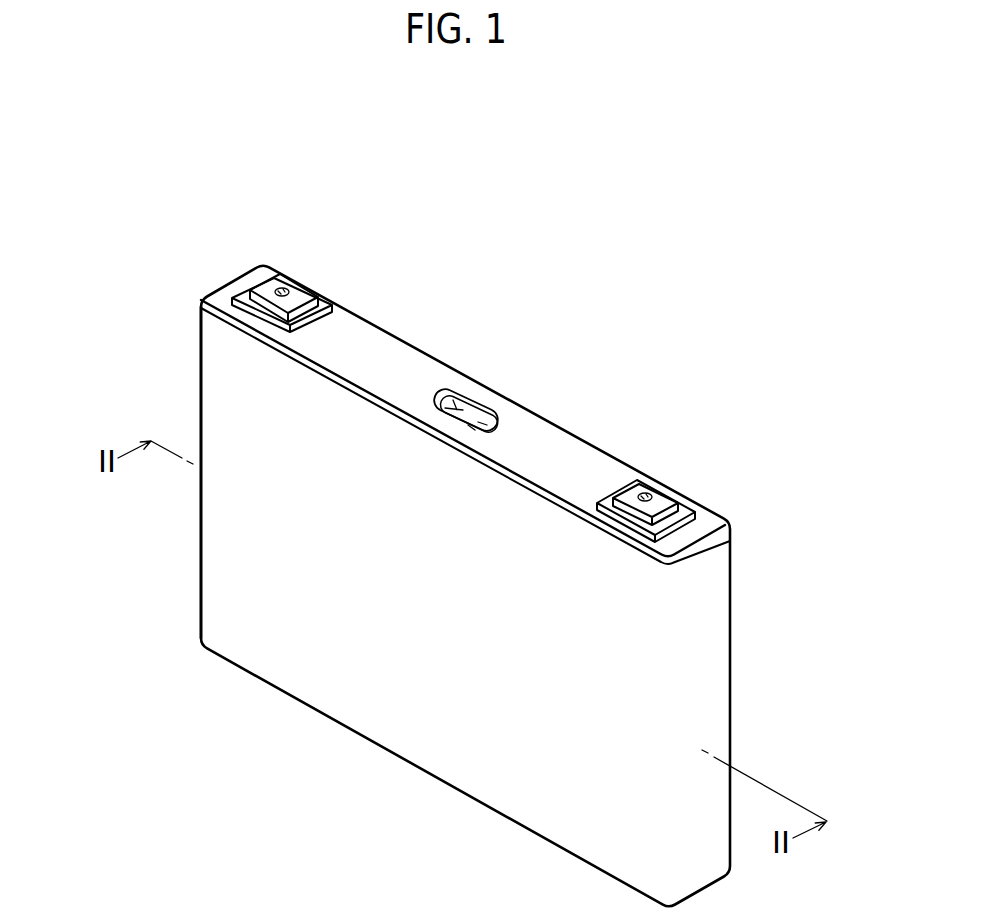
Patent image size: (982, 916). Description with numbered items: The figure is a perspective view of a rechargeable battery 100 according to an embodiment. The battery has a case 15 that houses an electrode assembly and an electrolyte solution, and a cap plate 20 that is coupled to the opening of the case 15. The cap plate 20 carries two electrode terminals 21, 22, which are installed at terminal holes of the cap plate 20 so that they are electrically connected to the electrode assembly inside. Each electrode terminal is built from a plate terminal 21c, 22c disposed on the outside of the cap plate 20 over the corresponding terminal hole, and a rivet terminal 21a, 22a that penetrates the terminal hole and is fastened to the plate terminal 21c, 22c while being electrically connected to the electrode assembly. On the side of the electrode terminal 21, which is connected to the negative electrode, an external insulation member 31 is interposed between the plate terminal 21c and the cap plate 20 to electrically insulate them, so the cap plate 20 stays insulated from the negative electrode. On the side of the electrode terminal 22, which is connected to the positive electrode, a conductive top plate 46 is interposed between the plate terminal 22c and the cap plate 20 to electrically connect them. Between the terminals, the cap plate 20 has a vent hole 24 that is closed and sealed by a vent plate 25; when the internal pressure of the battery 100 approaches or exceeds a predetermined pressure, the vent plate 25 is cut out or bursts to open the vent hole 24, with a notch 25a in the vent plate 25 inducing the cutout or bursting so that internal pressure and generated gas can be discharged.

The rechargeable battery 100 is at (495, 183).
The case 15 is at (407, 727).
The cap plate 20 is at (378, 345).
The electrode terminal 21 is at (258, 263).
The rivet terminal 21a is at (283, 288).
The plate terminal 21c is at (302, 295).
The electrode terminal 22 is at (640, 465).
The rivet terminal 22a is at (645, 496).
The plate terminal 22c is at (683, 507).
The vent hole 24 is at (447, 390).
The vent plate 25 is at (468, 409).
The notch 25a is at (482, 423).
The external insulation member 31 is at (240, 295).
The conductive top plate 46 is at (686, 507).